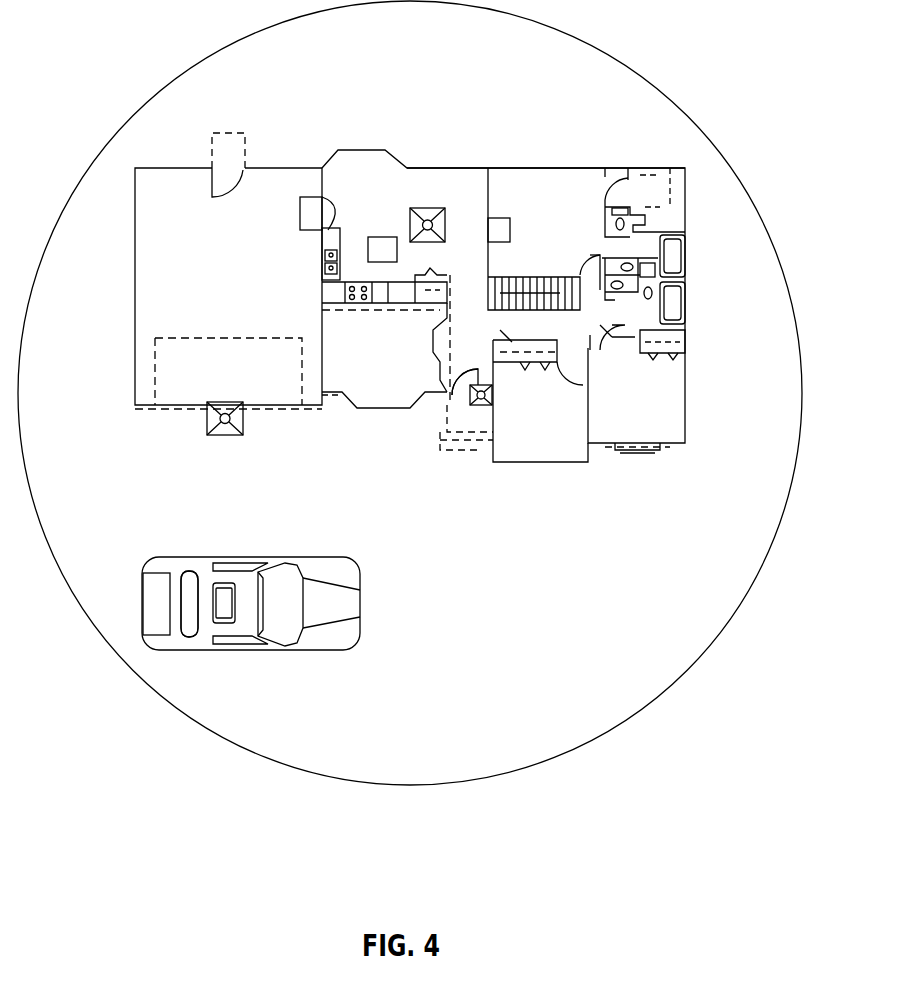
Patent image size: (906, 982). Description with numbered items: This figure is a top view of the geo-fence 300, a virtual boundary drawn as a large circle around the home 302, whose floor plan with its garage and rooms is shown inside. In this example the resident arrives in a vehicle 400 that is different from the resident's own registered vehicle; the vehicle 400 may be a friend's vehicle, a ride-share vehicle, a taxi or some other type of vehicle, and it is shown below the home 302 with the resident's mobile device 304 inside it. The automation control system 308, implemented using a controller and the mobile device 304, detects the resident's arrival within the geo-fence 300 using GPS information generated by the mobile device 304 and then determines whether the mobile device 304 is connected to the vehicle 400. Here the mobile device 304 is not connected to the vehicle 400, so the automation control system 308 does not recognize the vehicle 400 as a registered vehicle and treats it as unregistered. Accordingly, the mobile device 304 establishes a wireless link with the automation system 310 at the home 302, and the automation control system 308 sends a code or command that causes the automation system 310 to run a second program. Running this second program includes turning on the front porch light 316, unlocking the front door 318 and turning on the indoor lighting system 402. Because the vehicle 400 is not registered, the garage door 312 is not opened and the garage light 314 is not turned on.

The geo-fence 300 is at (598, 32).
The home 302 is at (449, 165).
The mobile device 304 is at (225, 592).
The automation control system 308 is at (200, 597).
The automation system 310 is at (499, 218).
The garage door 312 is at (177, 399).
The garage light 314 is at (222, 439).
The front porch light 316 is at (494, 397).
The front door 318 is at (450, 398).
The vehicle 400 is at (346, 578).
The indoor lighting system 402 is at (412, 209).